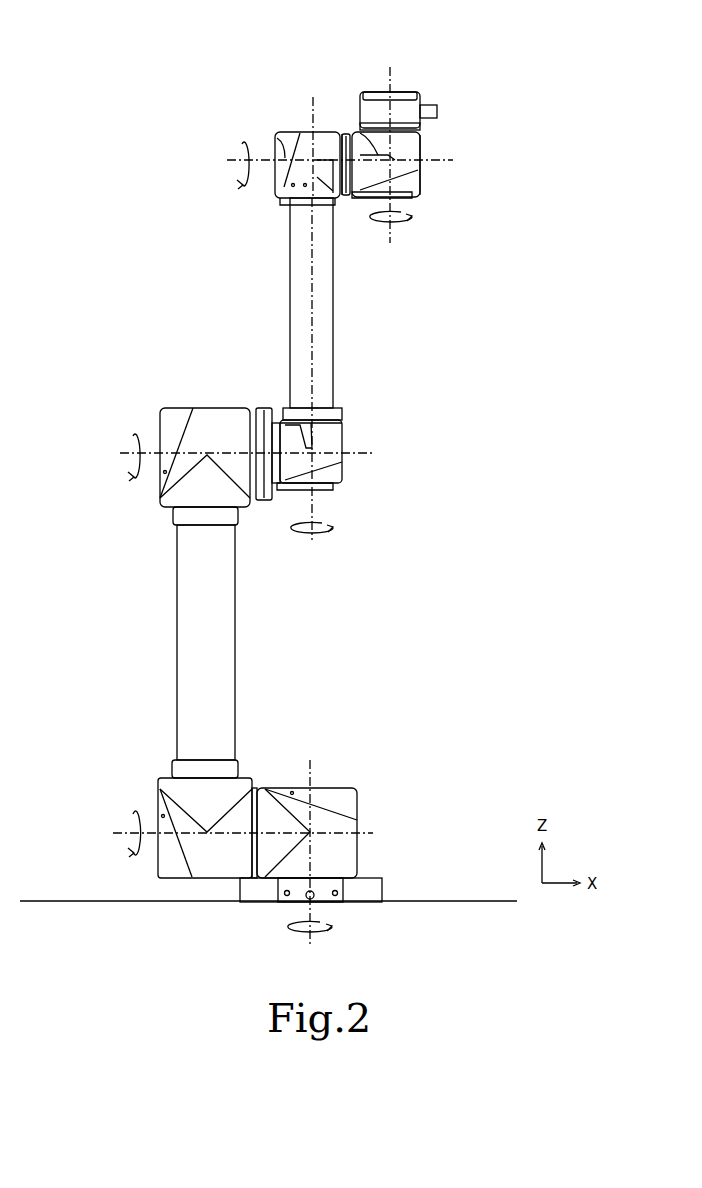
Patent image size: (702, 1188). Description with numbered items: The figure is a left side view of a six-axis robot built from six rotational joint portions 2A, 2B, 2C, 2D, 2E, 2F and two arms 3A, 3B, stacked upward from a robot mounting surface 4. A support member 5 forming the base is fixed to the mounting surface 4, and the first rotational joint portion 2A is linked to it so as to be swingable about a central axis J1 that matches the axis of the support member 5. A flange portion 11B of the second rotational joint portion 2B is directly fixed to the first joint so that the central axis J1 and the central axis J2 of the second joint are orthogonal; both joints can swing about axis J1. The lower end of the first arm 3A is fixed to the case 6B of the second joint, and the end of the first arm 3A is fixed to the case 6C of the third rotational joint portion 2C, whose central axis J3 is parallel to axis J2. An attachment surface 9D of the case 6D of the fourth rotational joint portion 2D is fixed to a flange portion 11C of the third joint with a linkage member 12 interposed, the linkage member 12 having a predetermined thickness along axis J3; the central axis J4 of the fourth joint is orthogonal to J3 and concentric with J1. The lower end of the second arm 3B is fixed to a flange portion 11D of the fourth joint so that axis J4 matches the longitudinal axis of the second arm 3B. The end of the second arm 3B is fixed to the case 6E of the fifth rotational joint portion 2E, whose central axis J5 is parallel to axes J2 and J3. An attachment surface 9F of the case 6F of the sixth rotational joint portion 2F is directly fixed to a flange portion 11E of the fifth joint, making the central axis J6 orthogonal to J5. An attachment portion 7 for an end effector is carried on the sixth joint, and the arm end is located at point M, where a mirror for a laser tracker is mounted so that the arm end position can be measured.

The first rotational joint portion 2A is at (337, 788).
The second rotational joint portion 2B is at (156, 863).
The third rotational joint portion 2C is at (210, 408).
The fourth rotational joint portion 2D is at (342, 477).
The fifth rotational joint portion 2E is at (292, 130).
The sixth rotational joint portion 2F is at (420, 145).
The first arm 3A is at (177, 617).
The second arm 3B is at (334, 310).
The robot mounting surface 4 is at (443, 901).
The support member 5 is at (367, 878).
The case 6B is at (158, 780).
The case 6C is at (175, 408).
The case 6D is at (342, 433).
The case 6E is at (308, 130).
The case 6F is at (420, 180).
The attachment portion 7 is at (355, 112).
The attachment surface 9D is at (277, 425).
The attachment surface 9F is at (348, 130).
The flange portion 11B is at (253, 790).
The flange portion 11C is at (255, 408).
The flange portion 11D is at (342, 422).
The flange portion 11E is at (343, 130).
The linkage member 12 is at (263, 408).
The point M is at (387, 97).
The central axis J1 is at (310, 935).
The central axis J2 is at (122, 829).
The central axis J3 is at (122, 445).
The central axis J4 is at (312, 536).
The central axis J5 is at (232, 156).
The central axis J6 is at (391, 228).